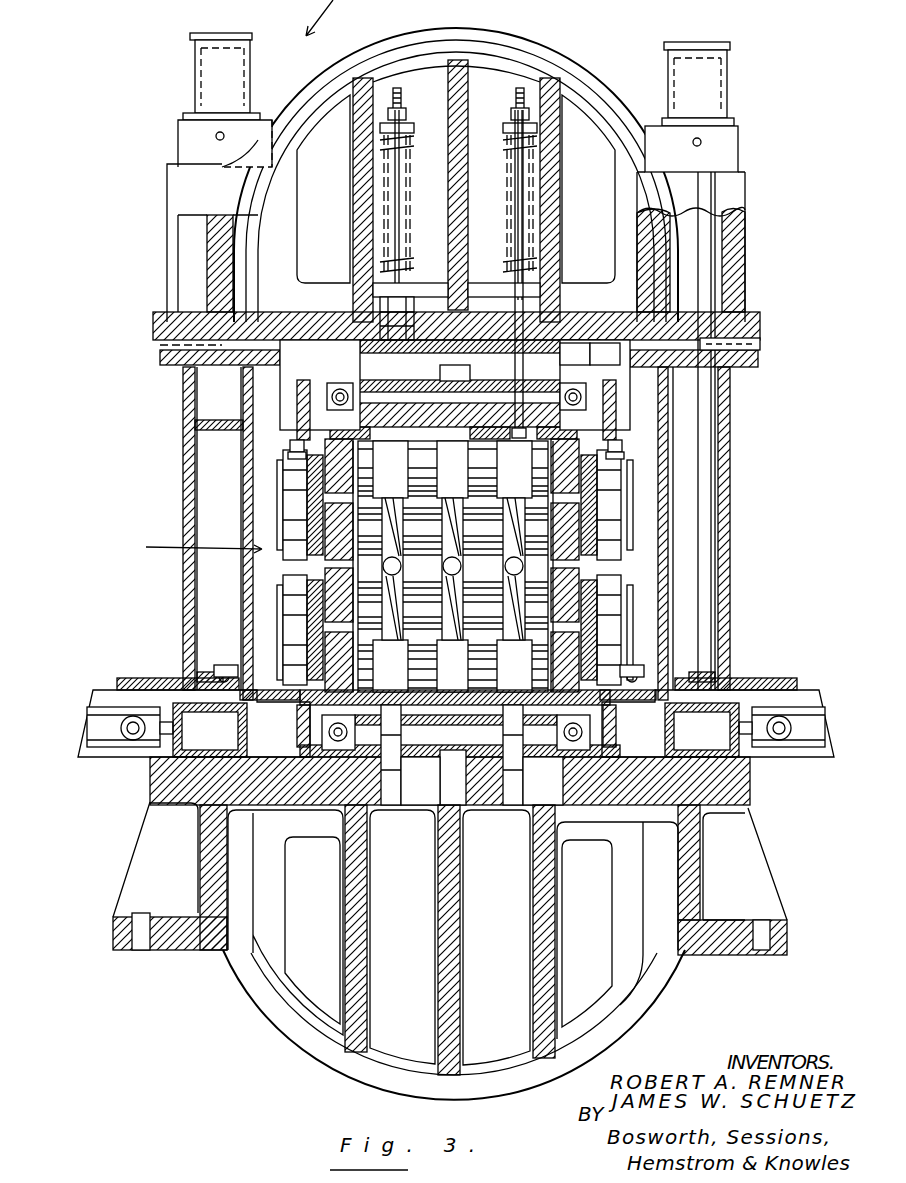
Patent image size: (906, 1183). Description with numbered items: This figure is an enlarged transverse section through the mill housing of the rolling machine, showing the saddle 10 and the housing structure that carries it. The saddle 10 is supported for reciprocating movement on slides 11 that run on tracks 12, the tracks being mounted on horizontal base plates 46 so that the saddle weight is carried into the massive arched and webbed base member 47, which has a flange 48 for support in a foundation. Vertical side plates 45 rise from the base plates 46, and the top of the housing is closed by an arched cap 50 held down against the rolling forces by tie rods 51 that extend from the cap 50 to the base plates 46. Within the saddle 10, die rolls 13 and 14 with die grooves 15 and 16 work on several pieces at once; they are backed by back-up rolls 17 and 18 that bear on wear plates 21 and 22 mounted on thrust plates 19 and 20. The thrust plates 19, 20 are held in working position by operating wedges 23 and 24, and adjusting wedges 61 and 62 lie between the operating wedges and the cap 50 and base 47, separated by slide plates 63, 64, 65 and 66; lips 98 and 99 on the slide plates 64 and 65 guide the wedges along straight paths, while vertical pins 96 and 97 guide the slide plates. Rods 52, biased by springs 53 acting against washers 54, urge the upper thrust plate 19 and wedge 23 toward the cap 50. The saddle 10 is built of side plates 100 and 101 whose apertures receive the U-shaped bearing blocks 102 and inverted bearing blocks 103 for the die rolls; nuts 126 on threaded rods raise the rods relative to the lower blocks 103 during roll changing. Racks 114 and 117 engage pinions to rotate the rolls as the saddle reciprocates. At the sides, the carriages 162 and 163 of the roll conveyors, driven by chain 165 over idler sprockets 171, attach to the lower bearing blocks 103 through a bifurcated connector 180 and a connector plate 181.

The saddle 10 is at (142, 549).
The slides 11 is at (355, 740).
The tracks 12 is at (345, 812).
The die roll 13 is at (440, 523).
The die roll 14 is at (503, 596).
The die grooves 15 is at (488, 532).
The die grooves 16 is at (440, 596).
The back-up roll 17 is at (472, 463).
The back-up roll 18 is at (472, 658).
The thrust plate 19 is at (290, 446).
The thrust plate 20 is at (185, 678).
The wear plate 21 is at (378, 455).
The wear plate 22 is at (370, 690).
The operating wedge 23 is at (478, 310).
The operating wedge 24 is at (455, 805).
The side plates 45 is at (183, 380).
The horizontal base plates 46 is at (225, 808).
The base member 47 is at (292, 1040).
The flange 48 is at (178, 950).
The cap 50 is at (507, 30).
The tie rods 51 is at (190, 62).
The rods 52 is at (398, 240).
The springs 53 is at (402, 150).
The washers 54 is at (412, 125).
The adjusting wedge 61 is at (426, 310).
The adjusting wedge 62 is at (462, 840).
The slide plate 63 is at (545, 370).
The slide plate 64 is at (598, 345).
The slide plate 65 is at (540, 790).
The slide plate 66 is at (420, 790).
The vertical pins 96 is at (365, 370).
The vertical pins 97 is at (391, 805).
The lips 98 is at (350, 382).
The lips 99 is at (370, 815).
The side plate 100 is at (300, 395).
The side plate 101 is at (612, 430).
The bearing blocks 102 is at (283, 495).
The bearing blocks 103 is at (283, 600).
The racks 114 is at (280, 468).
The racks 117 is at (270, 690).
The nuts 126 is at (290, 456).
The carriage 162 is at (118, 690).
The carriage 163 is at (790, 678).
The drive chain 165 is at (90, 757).
The idler sprockets 171 is at (90, 718).
The bifurcated connector 180 is at (210, 672).
The connector plate 181 is at (230, 668).